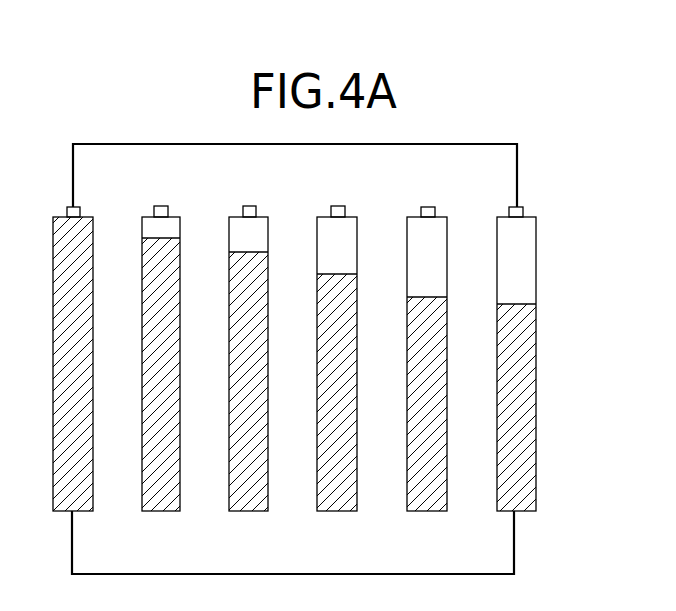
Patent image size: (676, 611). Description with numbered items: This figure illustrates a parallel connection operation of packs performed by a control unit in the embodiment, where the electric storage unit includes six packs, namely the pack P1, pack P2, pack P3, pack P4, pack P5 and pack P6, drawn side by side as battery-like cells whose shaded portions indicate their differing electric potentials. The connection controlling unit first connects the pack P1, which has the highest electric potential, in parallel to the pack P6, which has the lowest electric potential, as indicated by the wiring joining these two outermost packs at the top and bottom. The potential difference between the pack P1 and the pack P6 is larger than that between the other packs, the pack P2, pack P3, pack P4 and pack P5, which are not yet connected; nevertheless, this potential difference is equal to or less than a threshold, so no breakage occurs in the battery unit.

The pack P1 is at (93, 363).
The pack P2 is at (180, 363).
The pack P3 is at (268, 363).
The pack P4 is at (357, 363).
The pack P5 is at (447, 363).
The pack P6 is at (536, 363).